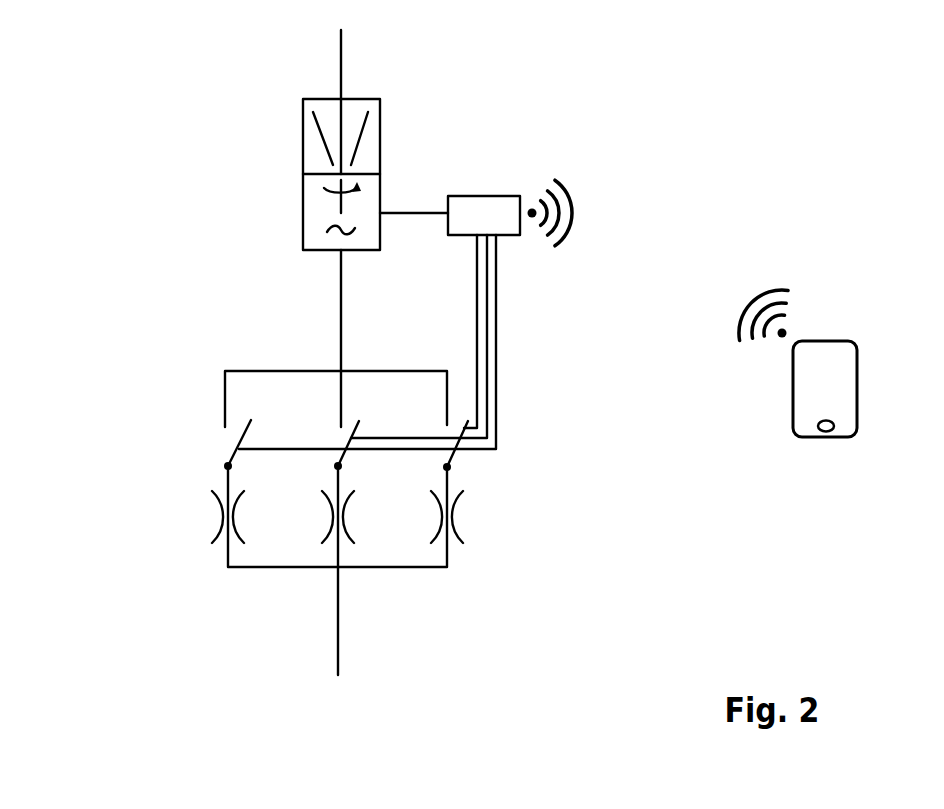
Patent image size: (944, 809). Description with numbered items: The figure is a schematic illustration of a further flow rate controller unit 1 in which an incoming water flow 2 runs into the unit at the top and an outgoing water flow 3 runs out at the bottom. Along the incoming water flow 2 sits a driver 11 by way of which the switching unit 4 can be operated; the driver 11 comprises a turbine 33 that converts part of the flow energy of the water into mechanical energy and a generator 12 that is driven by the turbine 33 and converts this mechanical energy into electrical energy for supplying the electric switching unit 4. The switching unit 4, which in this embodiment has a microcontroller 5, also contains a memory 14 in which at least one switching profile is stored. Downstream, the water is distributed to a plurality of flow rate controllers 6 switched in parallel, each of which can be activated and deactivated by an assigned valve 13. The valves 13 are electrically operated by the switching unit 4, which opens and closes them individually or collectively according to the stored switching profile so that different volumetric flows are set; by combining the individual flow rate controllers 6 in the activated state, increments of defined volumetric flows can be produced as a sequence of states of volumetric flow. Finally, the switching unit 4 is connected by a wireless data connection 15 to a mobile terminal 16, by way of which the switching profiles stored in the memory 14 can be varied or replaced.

The flow rate controller unit 1 is at (140, 232).
The incoming water flow 2 is at (338, 310).
The outgoing water flow 3 is at (335, 652).
The switching unit 4 is at (476, 168).
The microcontroller 5 is at (458, 235).
The flow rate controllers 6 is at (217, 518).
The driver 11 is at (303, 172).
The generator 12 is at (312, 213).
The valves 13 is at (225, 465).
The memory 14 is at (507, 207).
The wireless data connection 15 is at (552, 243).
The mobile terminal 16 is at (807, 425).
The turbine 33 is at (307, 128).